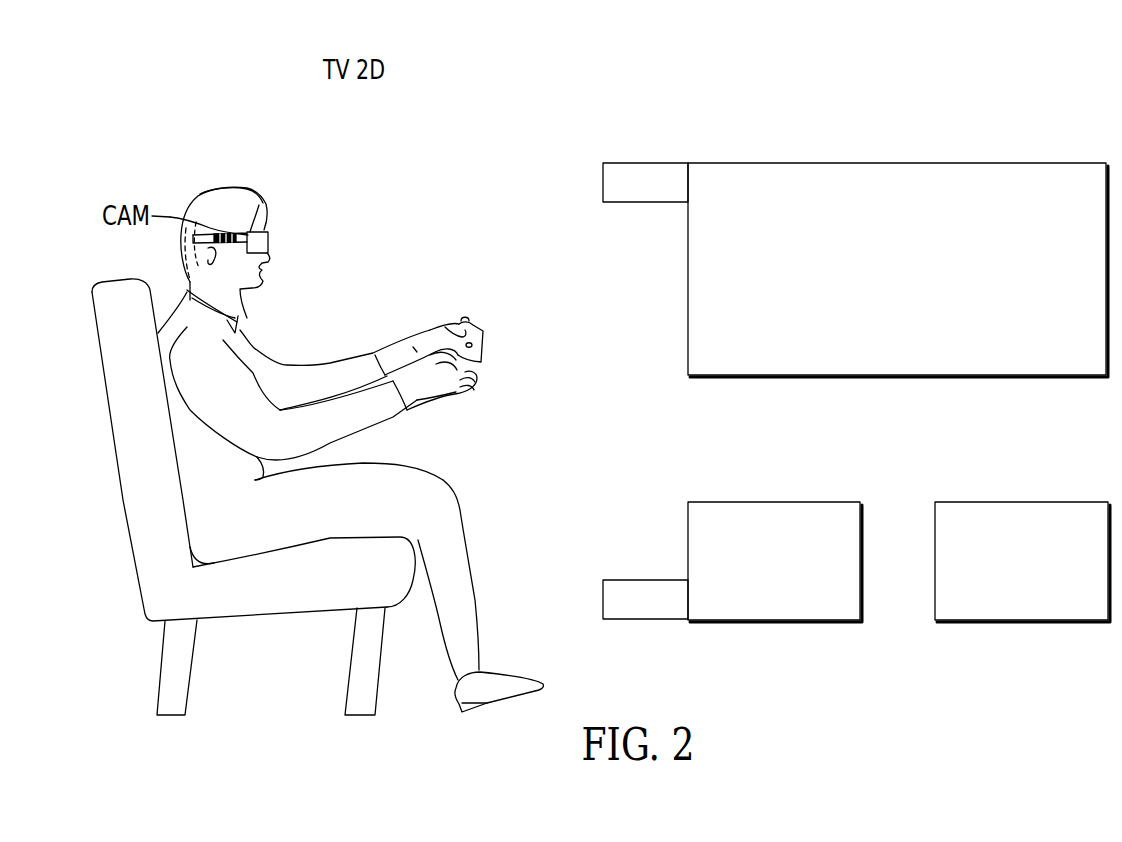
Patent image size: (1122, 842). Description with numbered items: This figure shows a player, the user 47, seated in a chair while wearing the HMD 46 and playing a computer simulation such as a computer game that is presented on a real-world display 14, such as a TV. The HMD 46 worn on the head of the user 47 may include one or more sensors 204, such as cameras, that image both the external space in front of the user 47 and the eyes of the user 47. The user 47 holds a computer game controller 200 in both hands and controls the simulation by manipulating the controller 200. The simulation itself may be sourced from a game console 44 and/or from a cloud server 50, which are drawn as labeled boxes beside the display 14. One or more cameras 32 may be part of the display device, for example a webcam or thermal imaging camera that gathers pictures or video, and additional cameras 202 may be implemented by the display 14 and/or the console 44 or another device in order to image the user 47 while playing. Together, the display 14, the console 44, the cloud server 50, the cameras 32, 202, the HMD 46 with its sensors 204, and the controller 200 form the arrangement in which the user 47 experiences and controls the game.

The display 14 is at (898, 163).
The camera 32 is at (646, 163).
The game console 44 is at (774, 502).
The cloud server 50 is at (1023, 502).
The camera 202 is at (646, 580).
The HMD 46 is at (270, 237).
The user 47 is at (212, 187).
The sensor 204 is at (259, 205).
The computer game controller 200 is at (463, 320).